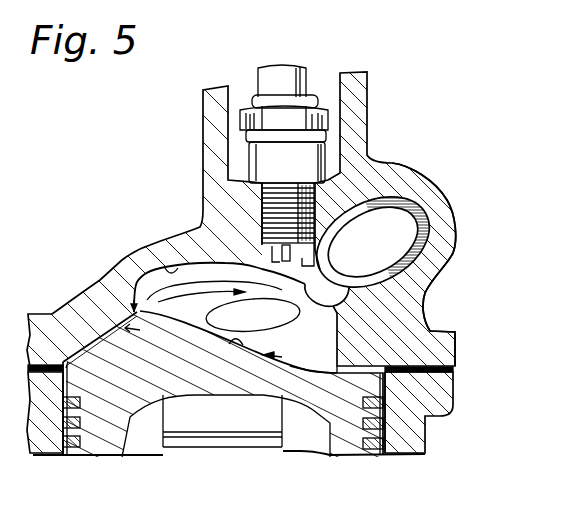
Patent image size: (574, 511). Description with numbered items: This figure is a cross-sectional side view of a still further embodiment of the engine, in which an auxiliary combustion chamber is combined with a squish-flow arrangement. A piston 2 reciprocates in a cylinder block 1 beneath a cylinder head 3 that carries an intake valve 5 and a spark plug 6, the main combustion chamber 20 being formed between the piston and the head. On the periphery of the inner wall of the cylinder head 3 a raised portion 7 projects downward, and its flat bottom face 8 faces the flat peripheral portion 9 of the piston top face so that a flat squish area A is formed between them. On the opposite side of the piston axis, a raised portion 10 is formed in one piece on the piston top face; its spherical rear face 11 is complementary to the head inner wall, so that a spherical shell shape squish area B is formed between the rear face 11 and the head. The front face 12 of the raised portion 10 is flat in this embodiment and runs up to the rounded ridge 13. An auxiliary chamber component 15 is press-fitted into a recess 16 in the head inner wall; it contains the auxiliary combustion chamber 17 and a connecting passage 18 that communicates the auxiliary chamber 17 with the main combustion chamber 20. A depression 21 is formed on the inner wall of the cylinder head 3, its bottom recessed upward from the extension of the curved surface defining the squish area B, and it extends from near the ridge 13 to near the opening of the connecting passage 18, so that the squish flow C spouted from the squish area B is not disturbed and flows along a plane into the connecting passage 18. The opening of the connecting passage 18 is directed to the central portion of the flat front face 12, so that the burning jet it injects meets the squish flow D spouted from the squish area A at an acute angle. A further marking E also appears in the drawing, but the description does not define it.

The cylinder block 1 is at (408, 452).
The piston 2 is at (330, 448).
The cylinder head 3 is at (186, 262).
The intake valve 5 is at (153, 290).
The spark plug 6 is at (306, 80).
The raised portion 7 is at (348, 350).
The bottom face 8 is at (384, 389).
The peripheral portion 9 is at (336, 374).
The raised portion 10 is at (130, 302).
The rear face 11 is at (95, 330).
The front face 12 is at (236, 348).
The ridge 13 is at (133, 292).
The auxiliary chamber component 15 is at (405, 197).
The recess 16 is at (455, 254).
The auxiliary combustion chamber 17 is at (383, 249).
The connecting passage 18 is at (393, 313).
The main combustion chamber 20 is at (330, 358).
The depression 21 is at (168, 268).
The flat squish area A is at (363, 363).
The spherical shell shape squish area B is at (73, 340).
The squish flow C is at (215, 292).
The squish flow D is at (290, 364).
The swirl flow E is at (205, 314).